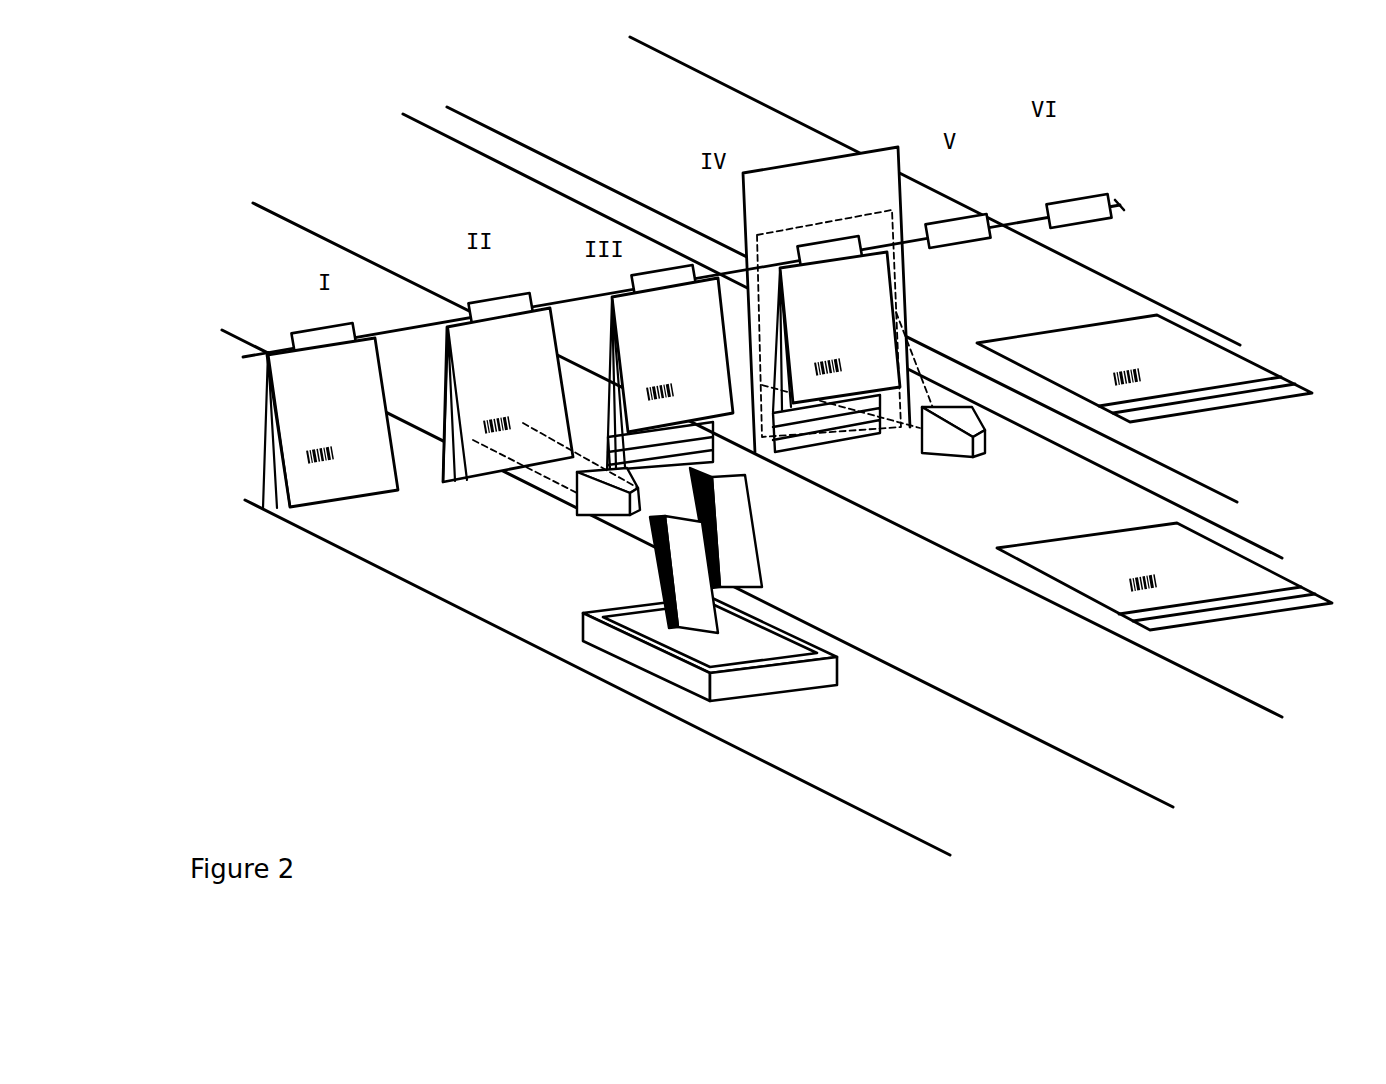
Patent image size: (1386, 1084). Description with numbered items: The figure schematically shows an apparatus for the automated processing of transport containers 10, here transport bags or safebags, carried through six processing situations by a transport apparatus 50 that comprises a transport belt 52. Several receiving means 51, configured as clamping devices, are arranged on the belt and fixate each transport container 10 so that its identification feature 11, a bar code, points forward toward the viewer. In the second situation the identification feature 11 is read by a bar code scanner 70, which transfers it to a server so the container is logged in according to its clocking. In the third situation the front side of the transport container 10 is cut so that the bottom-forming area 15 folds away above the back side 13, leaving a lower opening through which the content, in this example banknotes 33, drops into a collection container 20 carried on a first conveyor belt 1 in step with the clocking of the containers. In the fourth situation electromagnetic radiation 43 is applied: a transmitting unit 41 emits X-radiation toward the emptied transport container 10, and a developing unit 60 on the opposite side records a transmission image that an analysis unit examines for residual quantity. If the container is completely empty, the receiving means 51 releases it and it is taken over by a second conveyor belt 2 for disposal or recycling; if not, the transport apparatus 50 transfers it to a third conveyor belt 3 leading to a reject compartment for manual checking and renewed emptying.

The first conveyor belt 1 is at (896, 772).
The second conveyor belt 2 is at (1040, 502).
The third conveyor belt 3 is at (1010, 305).
The transport container 10 is at (358, 483).
The identification feature 11 is at (307, 457).
The back side 13 is at (263, 444).
The bottom-forming area 15 is at (483, 471).
The collection container 20 is at (645, 674).
The banknotes 33 is at (653, 560).
The transmitting unit 41 is at (952, 457).
The electromagnetic radiation 43 is at (890, 213).
The transport apparatus 50 is at (1032, 197).
The receiving means 51 is at (497, 330).
The transport belt 52 is at (1120, 205).
The developing unit 60 is at (780, 168).
The bar code scanner 70 is at (500, 480).